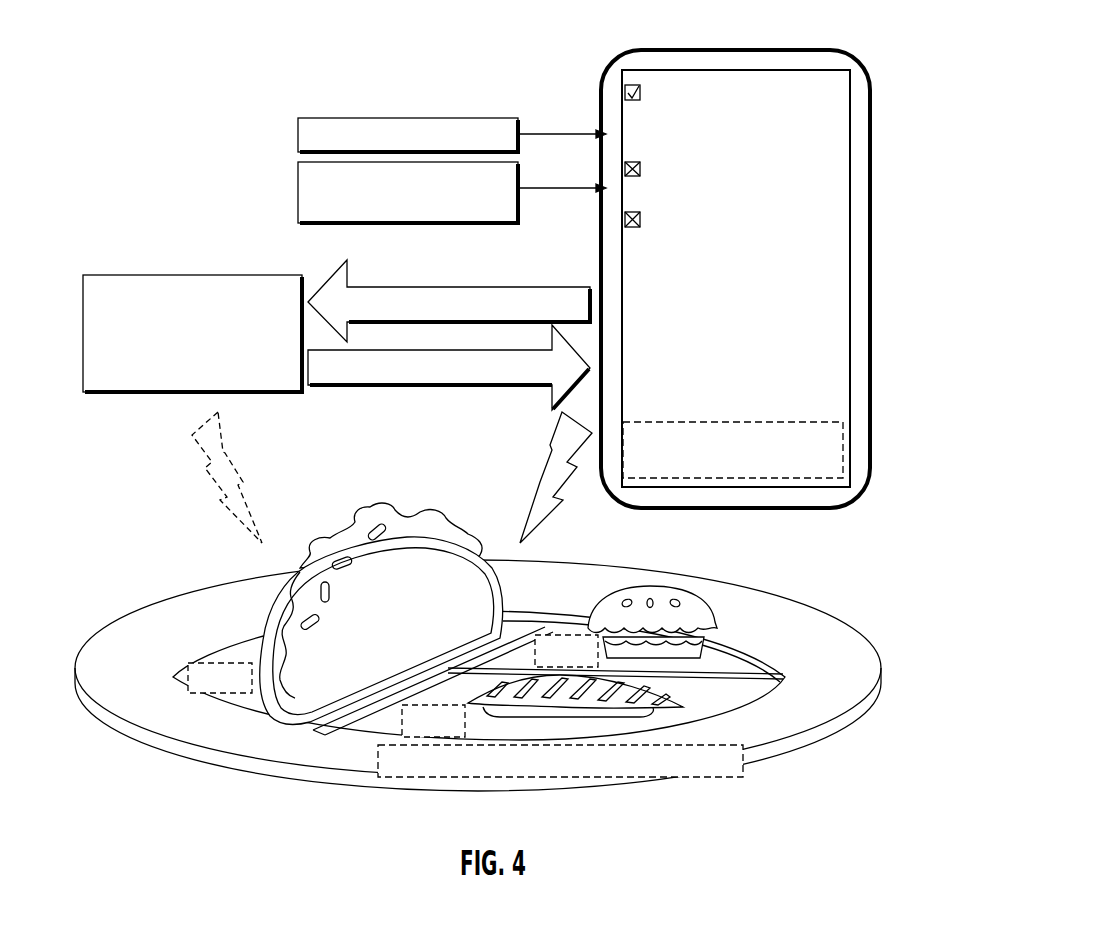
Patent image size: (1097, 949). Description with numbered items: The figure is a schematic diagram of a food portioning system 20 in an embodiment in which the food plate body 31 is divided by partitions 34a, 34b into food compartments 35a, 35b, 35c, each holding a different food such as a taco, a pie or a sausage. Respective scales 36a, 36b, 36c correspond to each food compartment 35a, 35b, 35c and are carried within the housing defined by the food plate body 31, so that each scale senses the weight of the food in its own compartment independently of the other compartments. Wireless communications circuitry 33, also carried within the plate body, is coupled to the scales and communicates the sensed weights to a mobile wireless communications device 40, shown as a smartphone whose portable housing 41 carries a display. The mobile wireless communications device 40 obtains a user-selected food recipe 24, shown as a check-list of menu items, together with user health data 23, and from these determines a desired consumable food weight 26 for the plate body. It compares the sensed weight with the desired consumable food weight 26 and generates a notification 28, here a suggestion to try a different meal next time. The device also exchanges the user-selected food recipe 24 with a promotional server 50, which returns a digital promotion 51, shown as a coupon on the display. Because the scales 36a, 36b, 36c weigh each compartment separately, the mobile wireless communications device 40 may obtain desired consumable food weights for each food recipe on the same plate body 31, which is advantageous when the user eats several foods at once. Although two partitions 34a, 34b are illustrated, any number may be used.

The food portioning system 20 is at (126, 170).
The user health data 23 is at (298, 128).
The desired consumable food weight 26 is at (298, 186).
The user-selected food recipe 24 is at (637, 86).
The mobile wireless communications device 40 is at (876, 82).
The portable housing 41 is at (870, 122).
The notification 28 is at (832, 388).
The digital promotion 51 is at (843, 442).
The promotional server 50 is at (78, 334).
The food plate body 31 is at (108, 611).
The wireless communications circuitry 33 is at (668, 781).
The partition 34a is at (783, 688).
The partition 34b is at (320, 732).
The food compartment 35a is at (740, 662).
The food compartment 35b is at (707, 705).
The food compartment 35c is at (232, 697).
The scale 36a is at (567, 633).
The scale 36b is at (400, 719).
The scale 36c is at (186, 677).